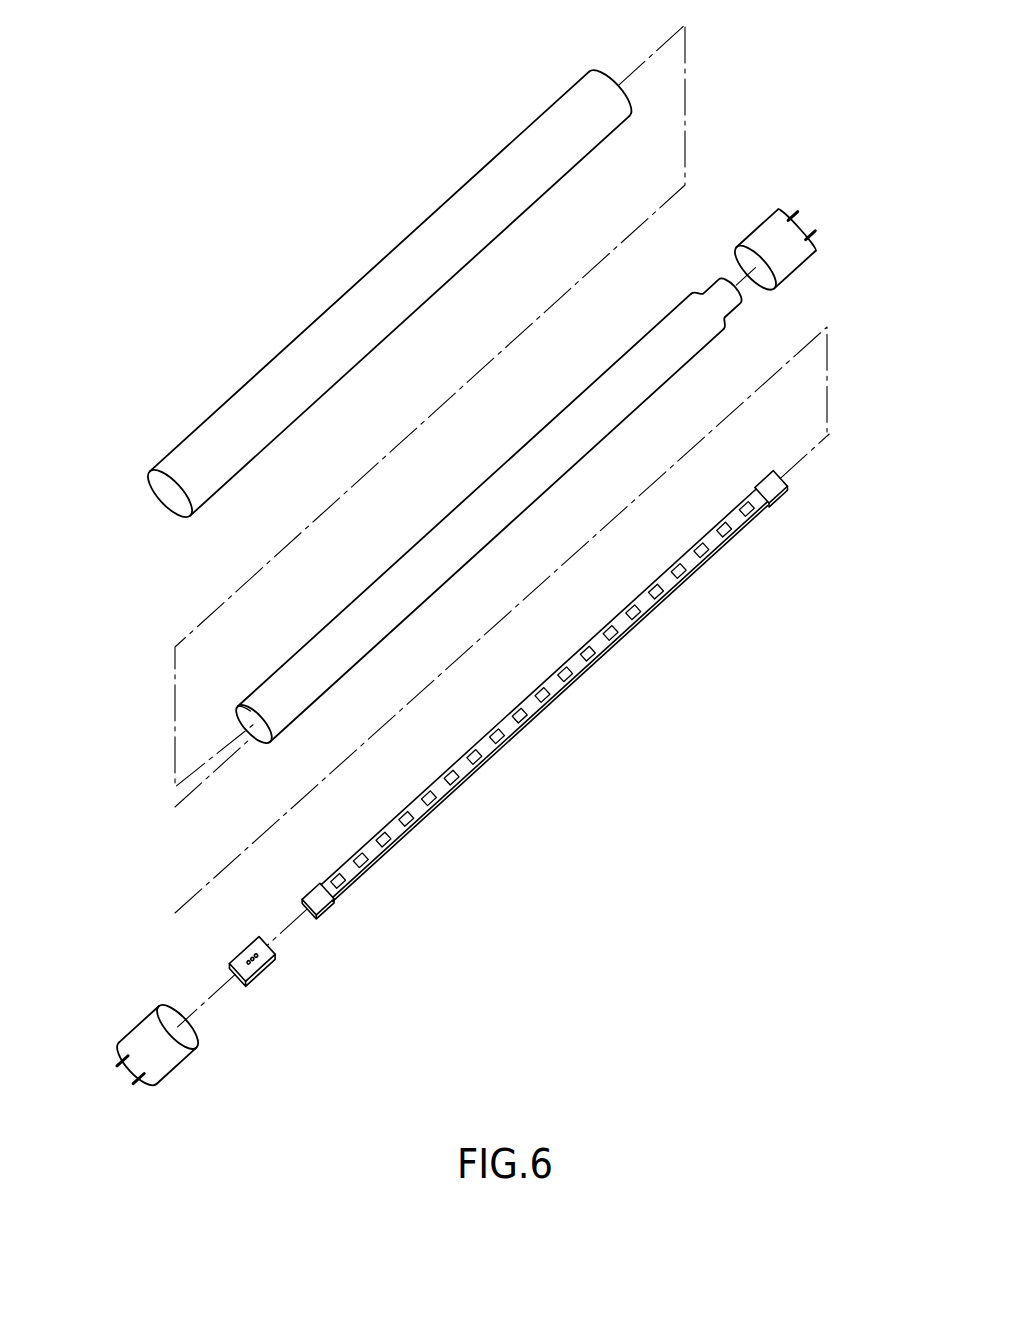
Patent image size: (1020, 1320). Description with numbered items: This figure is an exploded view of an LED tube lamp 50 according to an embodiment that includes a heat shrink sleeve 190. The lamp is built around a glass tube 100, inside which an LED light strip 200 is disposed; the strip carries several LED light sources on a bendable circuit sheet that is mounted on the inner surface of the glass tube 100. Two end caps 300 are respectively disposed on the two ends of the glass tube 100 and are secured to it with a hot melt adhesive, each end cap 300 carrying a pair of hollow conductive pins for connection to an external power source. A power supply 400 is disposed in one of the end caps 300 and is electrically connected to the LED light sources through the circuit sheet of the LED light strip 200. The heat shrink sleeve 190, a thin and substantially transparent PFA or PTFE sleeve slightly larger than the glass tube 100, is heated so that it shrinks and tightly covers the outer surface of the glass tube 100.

The LED tube lamp 50 is at (249, 190).
The heat shrink sleeve 190 is at (357, 300).
The glass tube 100 is at (482, 499).
The LED light strip 200 is at (505, 731).
The end cap 300 is at (793, 262).
The power supply 400 is at (258, 965).